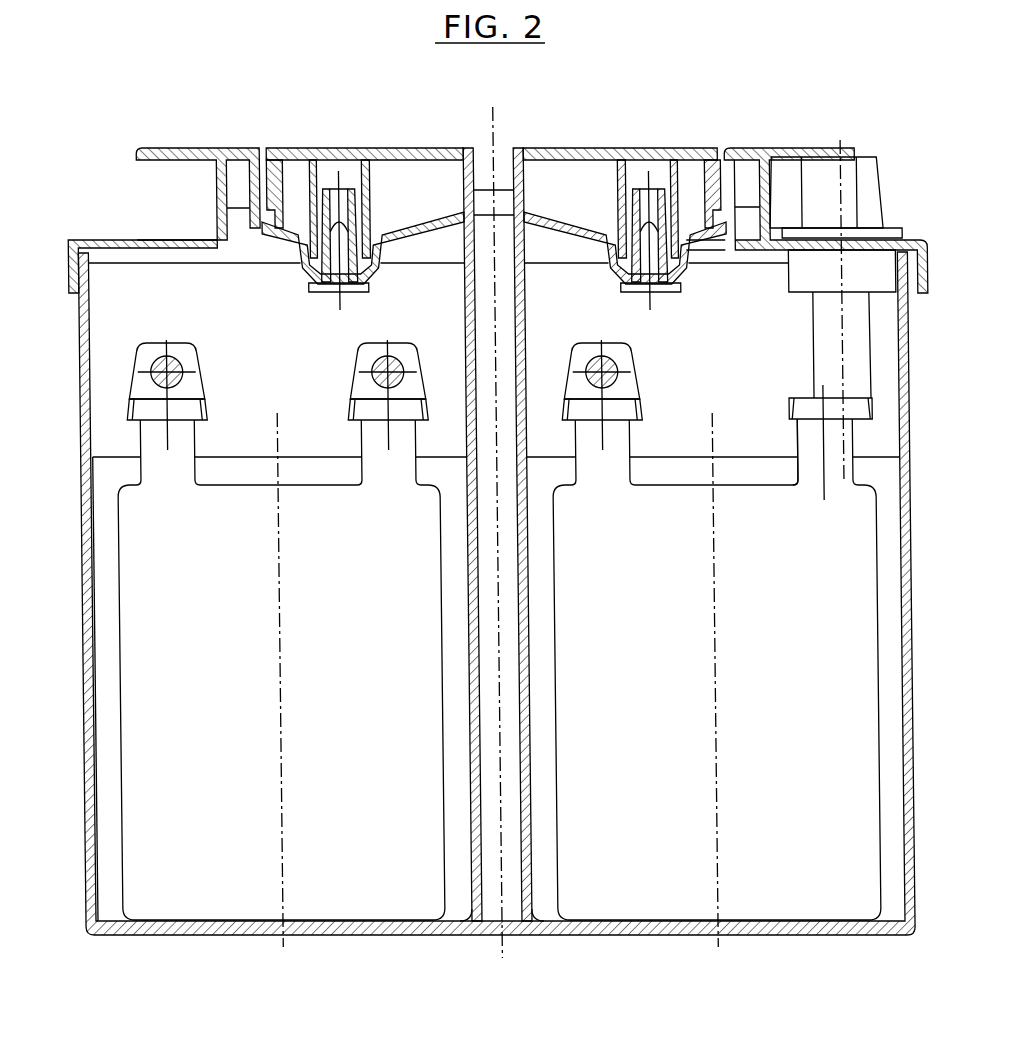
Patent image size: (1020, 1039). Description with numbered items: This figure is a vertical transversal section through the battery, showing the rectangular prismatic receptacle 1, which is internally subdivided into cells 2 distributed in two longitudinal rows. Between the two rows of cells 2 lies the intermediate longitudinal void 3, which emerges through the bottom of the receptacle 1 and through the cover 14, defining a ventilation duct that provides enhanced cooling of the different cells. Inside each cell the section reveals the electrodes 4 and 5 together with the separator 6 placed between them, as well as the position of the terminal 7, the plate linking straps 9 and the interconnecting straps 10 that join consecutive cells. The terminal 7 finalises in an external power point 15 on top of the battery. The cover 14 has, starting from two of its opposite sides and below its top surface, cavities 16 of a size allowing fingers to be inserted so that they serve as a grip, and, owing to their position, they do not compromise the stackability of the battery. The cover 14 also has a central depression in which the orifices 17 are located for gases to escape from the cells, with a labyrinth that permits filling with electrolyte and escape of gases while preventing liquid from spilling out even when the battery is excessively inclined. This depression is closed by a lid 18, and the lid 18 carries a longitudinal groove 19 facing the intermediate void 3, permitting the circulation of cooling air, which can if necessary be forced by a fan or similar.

The receptacle 1 is at (780, 923).
The cells 2 is at (278, 333).
The intermediate longitudinal void 3 is at (482, 877).
The electrode 4 is at (767, 686).
The electrode 5 is at (340, 686).
The separator 6 is at (229, 469).
The terminal 7 is at (825, 353).
The plate linking straps 9 is at (348, 410).
The interconnecting straps 10 is at (156, 370).
The cover 14 is at (193, 152).
The external power points 15 is at (865, 192).
The cavities 16 is at (158, 188).
The orifices 17 is at (339, 207).
The lid 18 is at (578, 148).
The longitudinal groove 19 is at (505, 152).